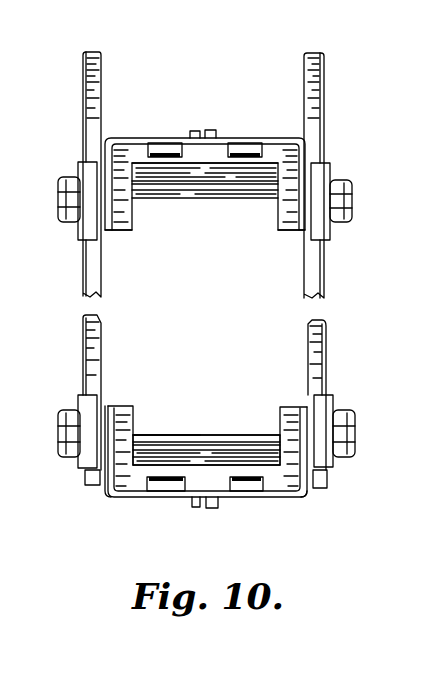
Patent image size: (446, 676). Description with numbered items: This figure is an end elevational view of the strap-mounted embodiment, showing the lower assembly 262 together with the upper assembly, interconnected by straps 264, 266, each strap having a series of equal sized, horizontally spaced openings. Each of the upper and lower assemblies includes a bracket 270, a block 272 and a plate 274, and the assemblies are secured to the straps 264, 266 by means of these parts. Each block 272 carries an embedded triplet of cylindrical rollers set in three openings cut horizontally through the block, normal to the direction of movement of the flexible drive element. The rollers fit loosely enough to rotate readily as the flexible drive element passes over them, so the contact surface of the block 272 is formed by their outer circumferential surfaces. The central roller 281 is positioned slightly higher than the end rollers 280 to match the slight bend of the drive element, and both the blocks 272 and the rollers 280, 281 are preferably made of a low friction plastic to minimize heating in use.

The lower assembly 262 is at (242, 427).
The strap 264 is at (321, 110).
The strap 266 is at (83, 67).
The bracket 270 is at (135, 137).
The block 272 is at (133, 218).
The plate 274 is at (78, 165).
The cylindrical roller 280 is at (243, 147).
The central roller 281 is at (148, 435).